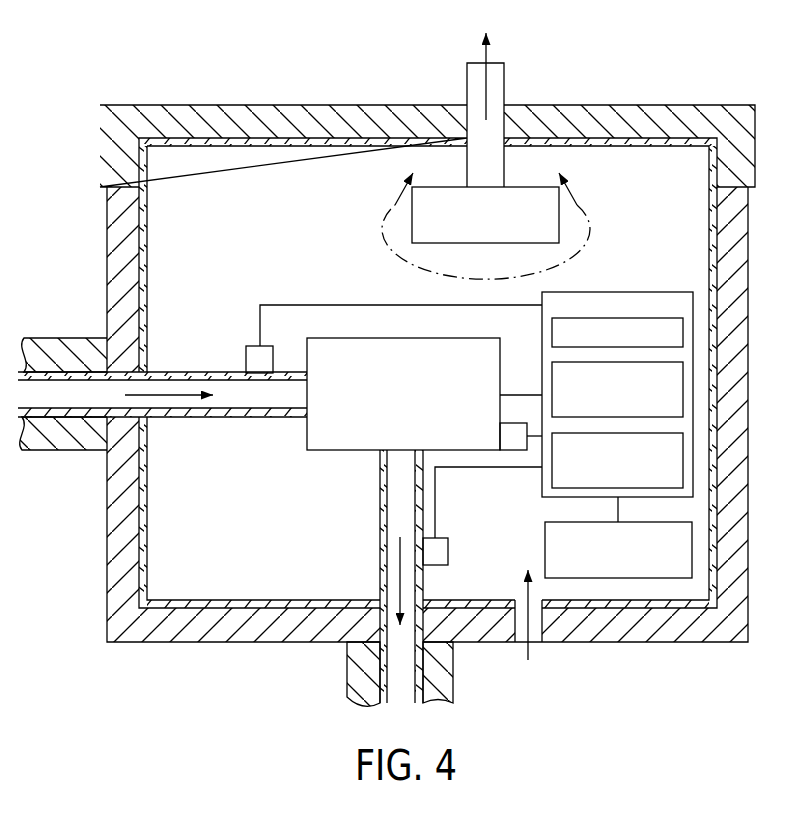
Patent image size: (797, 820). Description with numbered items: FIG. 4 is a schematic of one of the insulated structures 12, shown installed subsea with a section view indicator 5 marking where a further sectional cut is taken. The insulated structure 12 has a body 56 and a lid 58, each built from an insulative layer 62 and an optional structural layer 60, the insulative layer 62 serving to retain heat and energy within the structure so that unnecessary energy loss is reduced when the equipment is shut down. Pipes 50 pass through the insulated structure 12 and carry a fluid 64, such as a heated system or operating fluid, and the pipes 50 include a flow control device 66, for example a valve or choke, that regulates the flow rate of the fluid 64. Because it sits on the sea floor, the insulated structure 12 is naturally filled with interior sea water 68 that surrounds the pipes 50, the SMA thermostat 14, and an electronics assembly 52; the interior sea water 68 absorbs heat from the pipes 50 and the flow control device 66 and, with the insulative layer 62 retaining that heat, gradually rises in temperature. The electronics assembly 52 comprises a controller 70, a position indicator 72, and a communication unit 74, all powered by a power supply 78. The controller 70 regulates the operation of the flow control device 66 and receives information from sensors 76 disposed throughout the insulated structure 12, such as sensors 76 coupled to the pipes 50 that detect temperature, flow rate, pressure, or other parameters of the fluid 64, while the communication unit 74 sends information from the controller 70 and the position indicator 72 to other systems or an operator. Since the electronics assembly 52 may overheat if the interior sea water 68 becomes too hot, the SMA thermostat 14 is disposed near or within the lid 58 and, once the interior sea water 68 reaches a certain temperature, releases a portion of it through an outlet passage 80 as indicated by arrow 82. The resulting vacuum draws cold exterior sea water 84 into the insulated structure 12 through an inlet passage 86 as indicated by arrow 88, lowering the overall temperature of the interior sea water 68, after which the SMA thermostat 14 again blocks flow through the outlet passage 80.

The insulated structure 12 is at (683, 72).
The SMA thermostat 14 is at (412, 217).
The section view indicator (FIG. 5) 5 is at (486, 216).
The pipes 50 is at (380, 513).
The electronics assembly 52 is at (618, 292).
The body 56 is at (87, 592).
The lid 58 is at (223, 94).
The structural layer 60 is at (253, 142).
The insulative layer 62 is at (312, 120).
The fluid 64 is at (165, 408).
The flow control device 66 is at (403, 338).
The interior sea water 68 is at (320, 260).
The controller 70 is at (552, 330).
The position indicator 72 is at (552, 385).
The communication unit 74 is at (552, 475).
The sensors 76 is at (246, 358).
The power supply 78 is at (545, 548).
The outlet passage 80 is at (504, 80).
The arrow 82 is at (484, 86).
The exterior sea water 84 is at (760, 679).
The inlet passage 86 is at (547, 623).
The arrow 88 is at (522, 650).